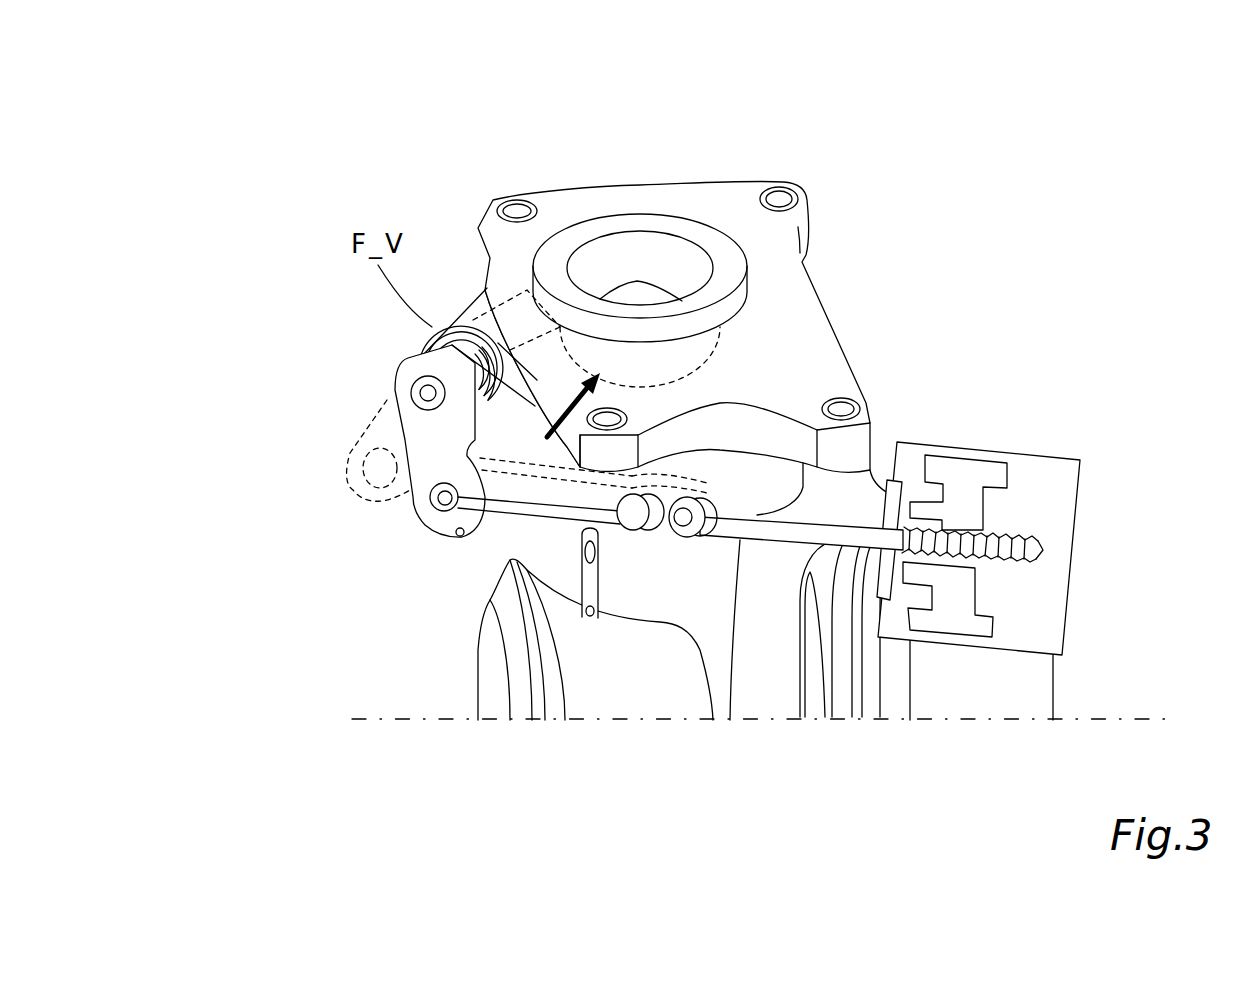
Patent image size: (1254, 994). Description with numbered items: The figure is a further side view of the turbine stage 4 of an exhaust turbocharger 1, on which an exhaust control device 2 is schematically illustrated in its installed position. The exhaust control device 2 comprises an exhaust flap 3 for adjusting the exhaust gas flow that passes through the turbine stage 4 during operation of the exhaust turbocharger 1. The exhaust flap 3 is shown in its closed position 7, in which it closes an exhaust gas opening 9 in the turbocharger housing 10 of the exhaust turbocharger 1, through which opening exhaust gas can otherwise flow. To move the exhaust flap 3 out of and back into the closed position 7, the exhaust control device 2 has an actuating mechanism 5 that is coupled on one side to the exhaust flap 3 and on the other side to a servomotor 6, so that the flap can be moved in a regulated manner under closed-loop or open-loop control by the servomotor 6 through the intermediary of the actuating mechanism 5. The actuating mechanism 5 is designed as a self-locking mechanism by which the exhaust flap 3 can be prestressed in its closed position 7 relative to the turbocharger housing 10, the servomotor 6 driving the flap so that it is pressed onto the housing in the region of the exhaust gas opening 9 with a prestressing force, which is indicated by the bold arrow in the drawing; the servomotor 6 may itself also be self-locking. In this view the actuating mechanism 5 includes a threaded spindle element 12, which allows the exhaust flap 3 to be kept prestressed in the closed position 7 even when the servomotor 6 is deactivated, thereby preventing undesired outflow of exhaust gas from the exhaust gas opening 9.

The exhaust turbocharger 1 is at (990, 752).
The exhaust control device 2 is at (277, 500).
The exhaust flap 3 is at (610, 197).
The turbine stage 4 is at (704, 254).
The actuating mechanism 5 is at (333, 447).
The servomotor 6 is at (1040, 452).
The closed position 7 is at (640, 184).
The exhaust gas opening 9 is at (667, 258).
The turbocharger housing 10 is at (783, 305).
The threaded spindle element 12 is at (1043, 550).